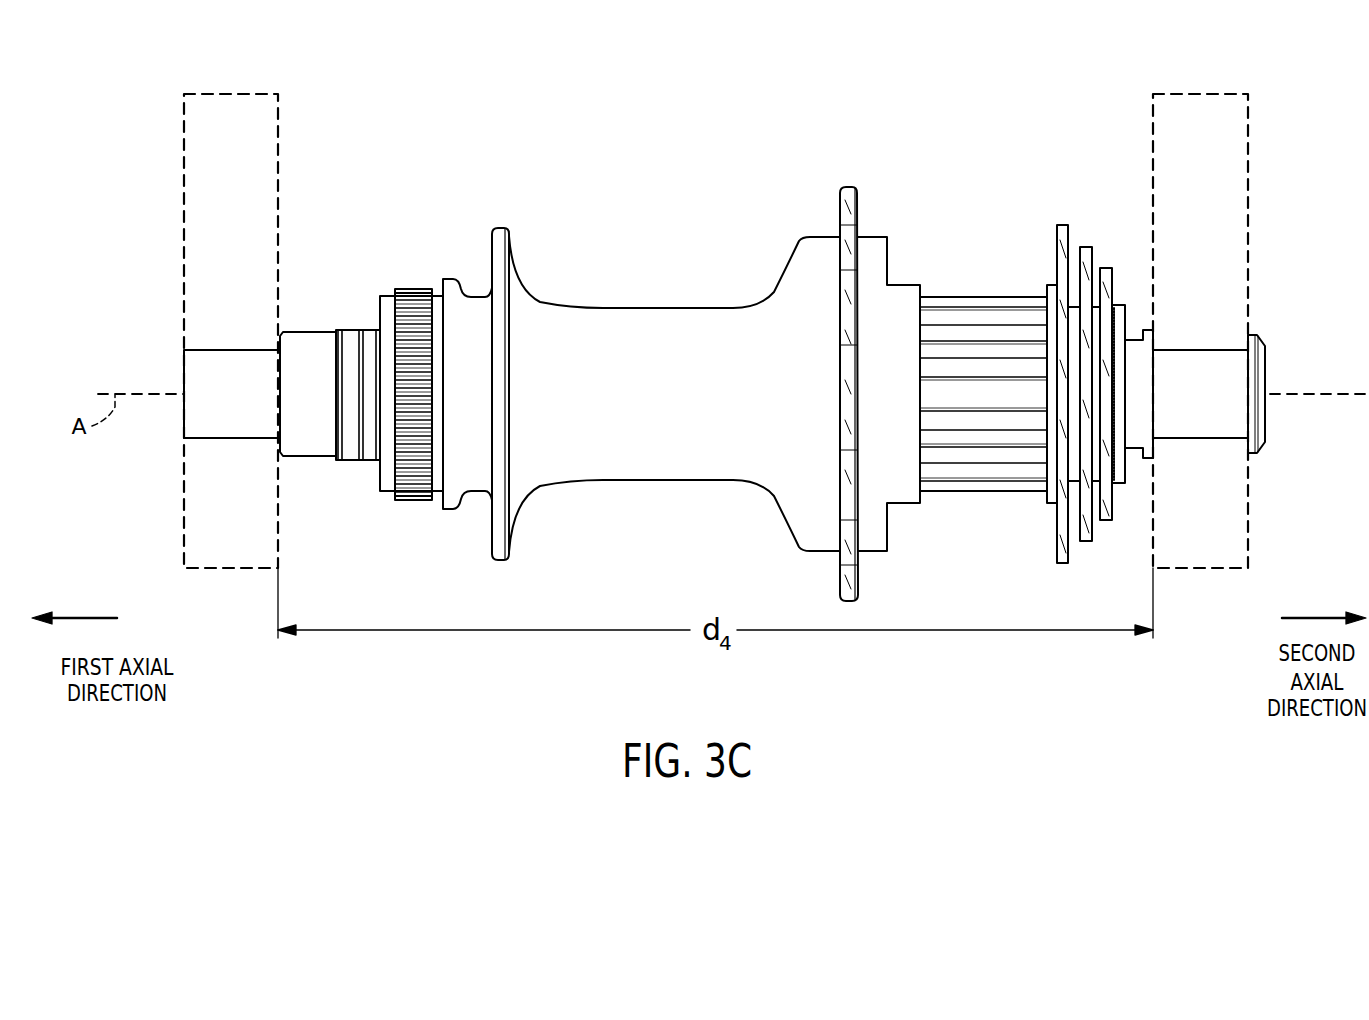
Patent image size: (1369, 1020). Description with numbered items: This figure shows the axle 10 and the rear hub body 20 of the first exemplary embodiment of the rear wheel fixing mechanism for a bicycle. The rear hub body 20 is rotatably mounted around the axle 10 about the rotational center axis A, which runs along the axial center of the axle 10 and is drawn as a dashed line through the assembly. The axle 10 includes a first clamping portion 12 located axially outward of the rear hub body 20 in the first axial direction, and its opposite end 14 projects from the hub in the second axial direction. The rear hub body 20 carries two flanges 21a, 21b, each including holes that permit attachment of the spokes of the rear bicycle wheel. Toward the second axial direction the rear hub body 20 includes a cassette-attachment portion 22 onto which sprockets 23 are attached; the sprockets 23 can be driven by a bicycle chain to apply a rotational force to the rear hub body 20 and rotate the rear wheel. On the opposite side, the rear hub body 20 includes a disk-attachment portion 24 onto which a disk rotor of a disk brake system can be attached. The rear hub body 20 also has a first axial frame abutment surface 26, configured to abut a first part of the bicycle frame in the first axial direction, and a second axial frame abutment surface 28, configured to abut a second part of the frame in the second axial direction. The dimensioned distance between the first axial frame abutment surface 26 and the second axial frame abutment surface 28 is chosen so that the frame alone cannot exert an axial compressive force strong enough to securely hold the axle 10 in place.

The axle 10 is at (1262, 350).
The first clamping portion 12 is at (230, 438).
The second axial end of hub axle 14 is at (1193, 439).
The rear hub body 20 is at (681, 361).
The flange 21a is at (504, 228).
The flange 21b is at (852, 187).
The cassette-attachment portion 22 is at (994, 297).
The sprockets 23 is at (1087, 247).
The disk-attachment portion 24 is at (412, 289).
The first axial frame abutment surface 26 is at (306, 332).
The second axial frame abutment surface 28 is at (1134, 340).